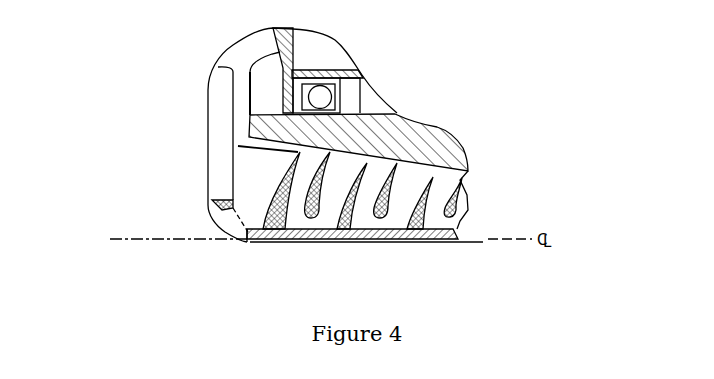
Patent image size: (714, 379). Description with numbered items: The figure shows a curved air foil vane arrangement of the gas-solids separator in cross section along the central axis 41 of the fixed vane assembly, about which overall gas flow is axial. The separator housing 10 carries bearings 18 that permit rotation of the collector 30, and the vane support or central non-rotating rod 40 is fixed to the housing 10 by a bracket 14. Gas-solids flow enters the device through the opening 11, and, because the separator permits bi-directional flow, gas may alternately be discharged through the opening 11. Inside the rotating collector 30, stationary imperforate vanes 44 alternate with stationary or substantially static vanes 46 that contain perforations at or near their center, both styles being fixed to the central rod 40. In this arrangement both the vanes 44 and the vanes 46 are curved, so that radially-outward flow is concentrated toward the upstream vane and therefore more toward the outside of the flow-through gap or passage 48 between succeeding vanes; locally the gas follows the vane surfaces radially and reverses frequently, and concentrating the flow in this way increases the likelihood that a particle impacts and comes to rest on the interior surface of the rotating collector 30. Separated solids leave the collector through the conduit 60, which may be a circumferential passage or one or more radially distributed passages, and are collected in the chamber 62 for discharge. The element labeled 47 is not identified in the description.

The separator housing 10 is at (343, 72).
The opening 11 is at (220, 223).
The bracket 14 is at (233, 207).
The bearings 18 is at (333, 96).
The collector 30 is at (453, 150).
The central non-rotating rod 40 is at (247, 236).
The central axis 41 is at (483, 242).
The stationary vanes 44 is at (270, 188).
The substantially static vanes 46 is at (333, 234).
The short seal fins 47 is at (304, 221).
The gap or passage 48 is at (300, 150).
The conduit 60 is at (240, 97).
The chamber 62 is at (250, 50).